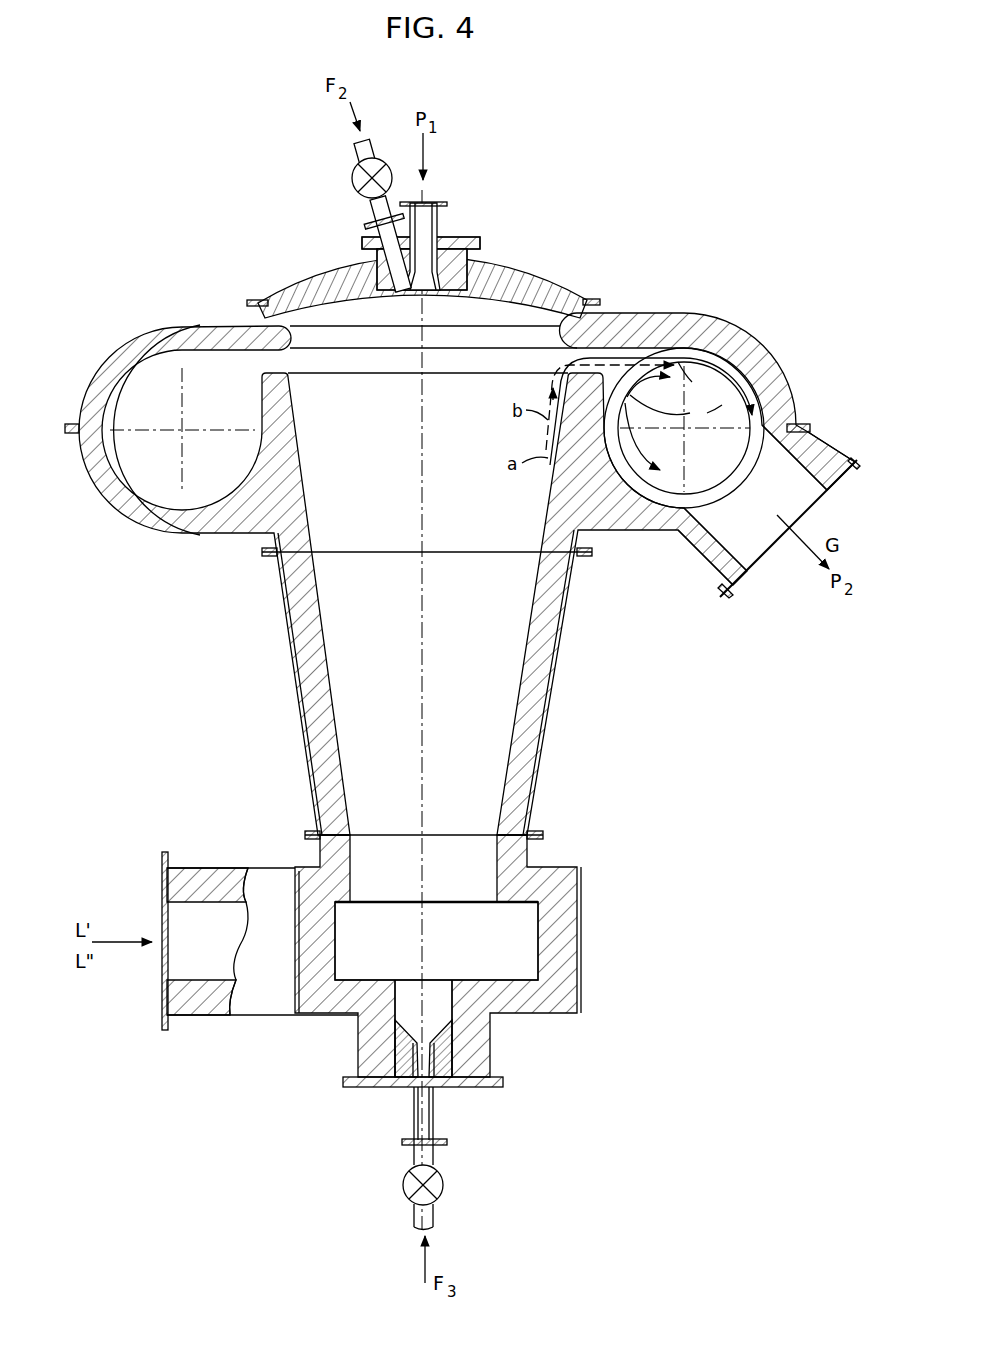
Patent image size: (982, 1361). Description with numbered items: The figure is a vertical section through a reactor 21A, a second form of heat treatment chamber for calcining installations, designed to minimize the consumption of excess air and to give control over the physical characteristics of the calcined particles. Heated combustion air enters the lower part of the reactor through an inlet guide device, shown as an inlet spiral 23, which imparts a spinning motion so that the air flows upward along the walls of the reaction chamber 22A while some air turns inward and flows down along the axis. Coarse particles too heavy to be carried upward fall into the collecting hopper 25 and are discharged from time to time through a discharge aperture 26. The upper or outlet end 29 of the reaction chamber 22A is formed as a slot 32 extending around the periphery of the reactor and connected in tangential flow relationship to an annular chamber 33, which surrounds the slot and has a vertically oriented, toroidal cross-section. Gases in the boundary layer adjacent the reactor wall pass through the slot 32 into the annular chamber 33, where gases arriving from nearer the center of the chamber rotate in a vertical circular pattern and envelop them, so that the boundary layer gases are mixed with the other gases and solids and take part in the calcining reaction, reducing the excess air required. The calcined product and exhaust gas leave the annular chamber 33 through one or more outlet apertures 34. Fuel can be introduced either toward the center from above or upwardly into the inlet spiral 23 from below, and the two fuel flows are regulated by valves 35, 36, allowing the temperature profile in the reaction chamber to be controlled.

The reactor 21A is at (552, 749).
The reaction chamber 22A is at (480, 667).
The inlet spiral 23 is at (518, 956).
The collecting hopper 25 is at (438, 1003).
The discharge aperture 26 is at (405, 1059).
The upper or outlet end 29 is at (523, 308).
The slot 32 is at (605, 350).
The annular chamber 33 is at (722, 382).
The outlet aperture 34 is at (727, 523).
The valve 35 is at (352, 178).
The valve 36 is at (445, 1180).